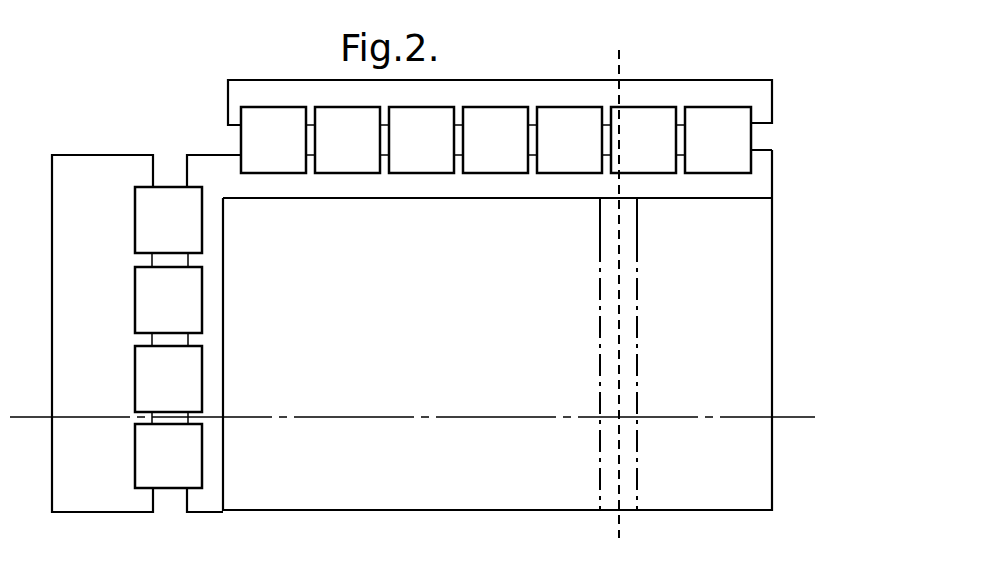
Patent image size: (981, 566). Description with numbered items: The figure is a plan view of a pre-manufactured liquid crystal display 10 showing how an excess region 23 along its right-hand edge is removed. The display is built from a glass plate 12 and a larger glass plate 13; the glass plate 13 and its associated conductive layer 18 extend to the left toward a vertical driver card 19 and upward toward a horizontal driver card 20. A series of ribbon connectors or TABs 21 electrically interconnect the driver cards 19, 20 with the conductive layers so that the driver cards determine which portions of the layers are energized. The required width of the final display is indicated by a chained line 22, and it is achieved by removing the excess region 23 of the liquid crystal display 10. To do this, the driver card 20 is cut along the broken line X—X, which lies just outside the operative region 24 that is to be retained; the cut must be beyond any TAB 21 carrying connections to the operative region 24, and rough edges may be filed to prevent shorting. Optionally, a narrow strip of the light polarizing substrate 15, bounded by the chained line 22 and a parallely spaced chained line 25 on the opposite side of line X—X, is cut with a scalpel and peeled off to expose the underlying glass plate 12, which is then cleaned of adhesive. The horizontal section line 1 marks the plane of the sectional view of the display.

The section line I-I 1 is at (795, 430).
The liquid crystal display 10 is at (160, 103).
The glass plate 12 is at (631, 498).
The glass plate 13 is at (192, 317).
The light polarizing substrate 15 is at (283, 510).
The conductive layer 18 is at (211, 155).
The vertical driver card 19 is at (92, 155).
The horizontal driver card 20 is at (276, 80).
The ribbon connectors or TABs 21 is at (443, 297).
The chained line 22 is at (600, 344).
The excess region 23 is at (704, 354).
The operative region 24 is at (411, 354).
The chained line 25 is at (637, 344).